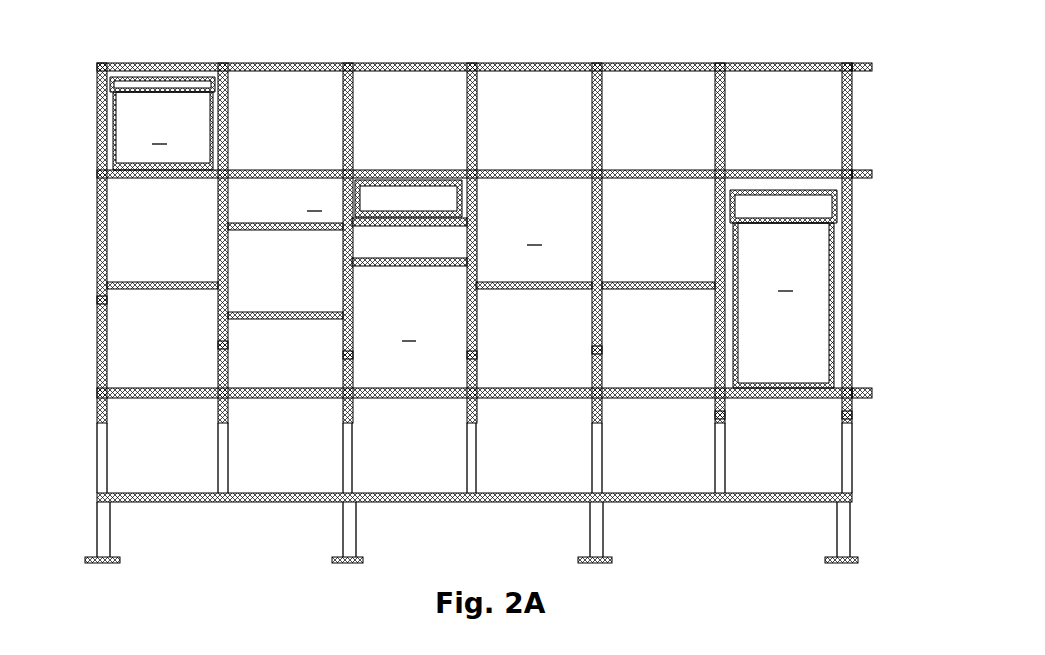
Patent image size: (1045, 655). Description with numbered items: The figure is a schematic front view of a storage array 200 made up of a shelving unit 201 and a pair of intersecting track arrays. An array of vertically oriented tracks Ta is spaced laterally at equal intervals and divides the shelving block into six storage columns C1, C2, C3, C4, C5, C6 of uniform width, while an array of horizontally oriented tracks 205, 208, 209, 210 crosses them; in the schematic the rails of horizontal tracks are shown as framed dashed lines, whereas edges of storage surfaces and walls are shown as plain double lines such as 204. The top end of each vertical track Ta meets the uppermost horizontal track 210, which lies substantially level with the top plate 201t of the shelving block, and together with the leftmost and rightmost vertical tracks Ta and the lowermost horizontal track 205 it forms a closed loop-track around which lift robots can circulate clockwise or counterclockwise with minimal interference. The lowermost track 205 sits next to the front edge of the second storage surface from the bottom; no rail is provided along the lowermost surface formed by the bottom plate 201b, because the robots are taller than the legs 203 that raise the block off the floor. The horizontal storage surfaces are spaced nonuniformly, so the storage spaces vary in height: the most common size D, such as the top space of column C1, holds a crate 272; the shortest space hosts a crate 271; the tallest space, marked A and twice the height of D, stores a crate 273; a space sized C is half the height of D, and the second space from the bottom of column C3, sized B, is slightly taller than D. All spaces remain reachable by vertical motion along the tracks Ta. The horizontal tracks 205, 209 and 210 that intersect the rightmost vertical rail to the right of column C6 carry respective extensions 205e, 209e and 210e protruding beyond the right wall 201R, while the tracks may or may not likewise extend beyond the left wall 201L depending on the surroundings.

The storage array 200 is at (176, 50).
The shelving unit 201 is at (887, 467).
The top plate 201t is at (403, 64).
The bottom plate 201b is at (412, 493).
The left wall 201L is at (97, 458).
The right wall 201R is at (852, 487).
The legs 203 is at (97, 518).
The storage surface edge 204 is at (146, 282).
The lowermost horizontal track 205 is at (172, 398).
The extension of lowermost horizontal track 205e is at (868, 398).
The horizontally oriented track 208 is at (547, 283).
The horizontally oriented track 209 is at (636, 178).
The extension of horizontal track 209e is at (862, 173).
The uppermost horizontal track 210 is at (662, 72).
The extension of uppermost horizontal track 210e is at (864, 71).
The crate 271 is at (393, 196).
The crate 272 is at (125, 122).
The crate 273 is at (830, 310).
The vertically oriented tracks Ta is at (97, 300).
The storage column C1 is at (175, 526).
The storage column C2 is at (295, 526).
The storage column C3 is at (416, 526).
The storage column C4 is at (536, 526).
The storage column C5 is at (655, 526).
The storage column C6 is at (770, 526).